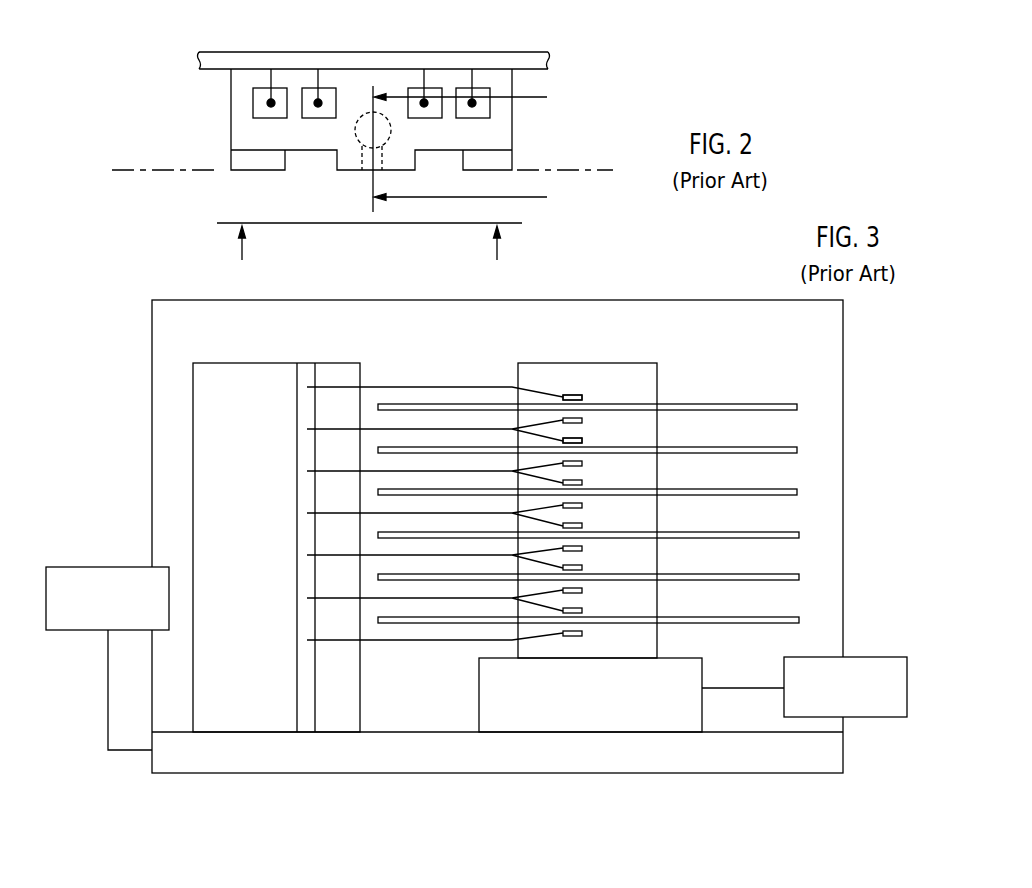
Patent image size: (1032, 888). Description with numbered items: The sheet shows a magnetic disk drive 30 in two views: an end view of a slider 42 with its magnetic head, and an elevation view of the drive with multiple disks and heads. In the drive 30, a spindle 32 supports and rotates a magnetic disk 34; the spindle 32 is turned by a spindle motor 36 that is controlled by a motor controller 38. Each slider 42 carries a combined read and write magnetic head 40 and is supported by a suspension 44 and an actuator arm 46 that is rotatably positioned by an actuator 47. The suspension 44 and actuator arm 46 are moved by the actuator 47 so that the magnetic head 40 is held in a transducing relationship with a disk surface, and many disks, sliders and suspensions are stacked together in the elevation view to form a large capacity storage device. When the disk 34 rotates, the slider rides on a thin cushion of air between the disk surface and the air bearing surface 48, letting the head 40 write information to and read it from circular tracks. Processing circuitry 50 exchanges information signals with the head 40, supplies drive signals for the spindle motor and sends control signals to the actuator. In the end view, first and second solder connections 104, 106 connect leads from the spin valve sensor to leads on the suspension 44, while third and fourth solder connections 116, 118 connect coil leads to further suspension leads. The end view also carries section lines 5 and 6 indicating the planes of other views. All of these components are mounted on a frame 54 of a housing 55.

In FIG. 2, the first solder connection 104 is at (253, 88).
In FIG. 2, the third solder connection 116 is at (301, 88).
In FIG. 2, the fourth solder connection 118 is at (407, 88).
In FIG. 2, the second solder connection 106 is at (455, 88).
In FIG. 2, the slider 42 is at (231, 100).
In FIG. 3, the slider 42 is at (583, 420).
In FIG. 2, the combined read and write magnetic head 40 is at (360, 172).
In FIG. 2, the air bearing surface 48 is at (167, 173).
In FIG. 2, the section line 6- 6 is at (469, 148).
In FIG. 2, the section line 5- 5 is at (369, 249).
In FIG. 3, the housing 55 is at (706, 301).
In FIG. 3, the frame 54 is at (238, 775).
In FIG. 3, the actuator 47 is at (245, 362).
In FIG. 3, the magnetic disk drive 30 is at (722, 384).
In FIG. 3, the actuator arm 46 is at (472, 428).
In FIG. 3, the spindle 32 is at (647, 363).
In FIG. 3, the magnetic disk 34 is at (790, 580).
In FIG. 3, the suspension 44 is at (563, 438).
In FIG. 3, the spindle motor 36 is at (572, 704).
In FIG. 3, the motor controller 38 is at (893, 718).
In FIG. 3, the processing circuitry 50 is at (67, 563).